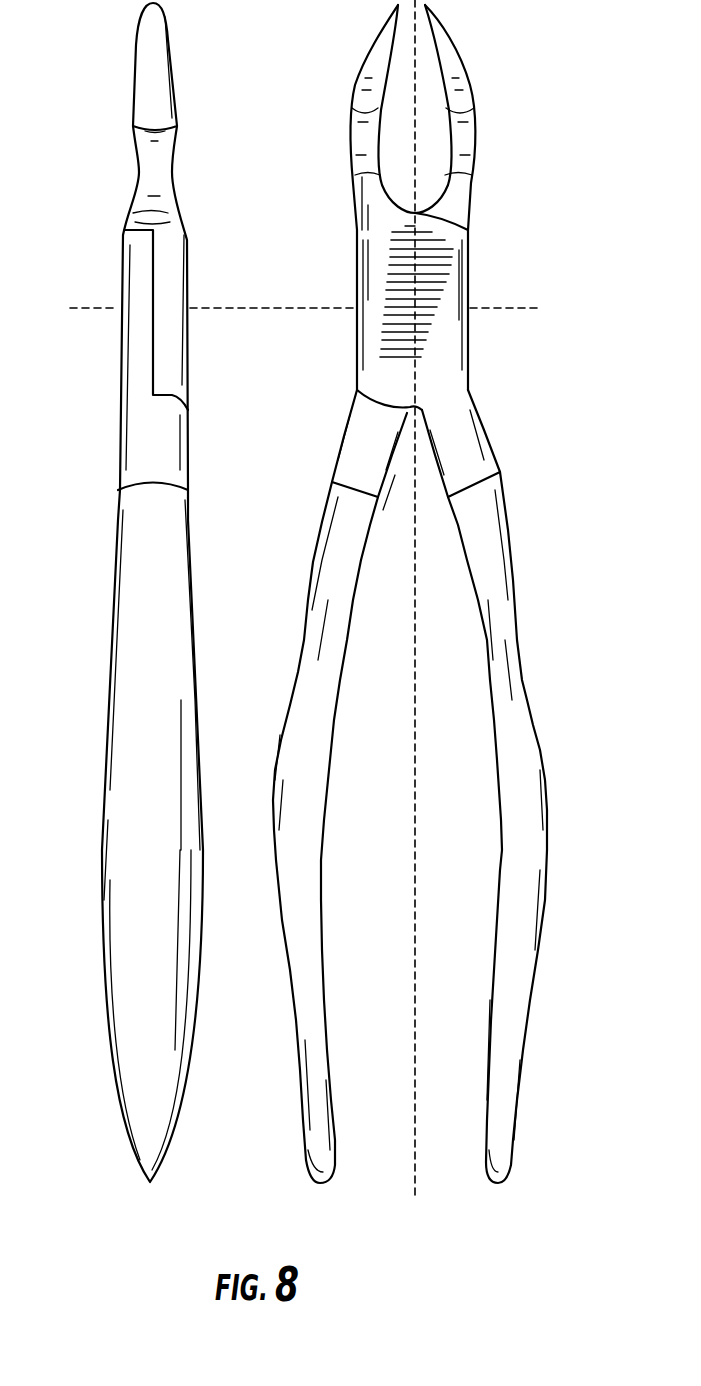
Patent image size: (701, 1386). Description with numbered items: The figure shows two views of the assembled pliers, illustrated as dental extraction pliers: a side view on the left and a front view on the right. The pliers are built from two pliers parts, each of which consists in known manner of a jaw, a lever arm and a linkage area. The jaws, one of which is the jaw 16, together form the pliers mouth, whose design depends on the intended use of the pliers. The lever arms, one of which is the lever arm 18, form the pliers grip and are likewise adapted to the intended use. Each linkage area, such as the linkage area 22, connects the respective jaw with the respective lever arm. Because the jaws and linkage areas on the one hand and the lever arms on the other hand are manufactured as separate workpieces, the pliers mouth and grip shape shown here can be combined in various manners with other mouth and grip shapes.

The jaw 16 is at (367, 70).
The lever arm 18 is at (298, 826).
The linkage area 22 is at (170, 290).